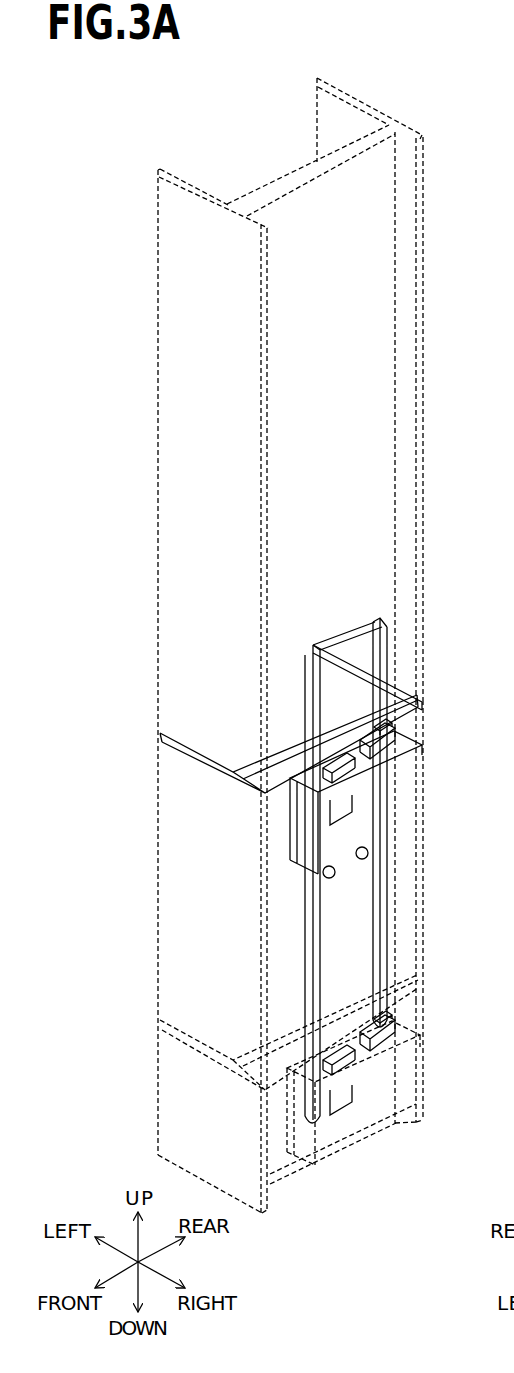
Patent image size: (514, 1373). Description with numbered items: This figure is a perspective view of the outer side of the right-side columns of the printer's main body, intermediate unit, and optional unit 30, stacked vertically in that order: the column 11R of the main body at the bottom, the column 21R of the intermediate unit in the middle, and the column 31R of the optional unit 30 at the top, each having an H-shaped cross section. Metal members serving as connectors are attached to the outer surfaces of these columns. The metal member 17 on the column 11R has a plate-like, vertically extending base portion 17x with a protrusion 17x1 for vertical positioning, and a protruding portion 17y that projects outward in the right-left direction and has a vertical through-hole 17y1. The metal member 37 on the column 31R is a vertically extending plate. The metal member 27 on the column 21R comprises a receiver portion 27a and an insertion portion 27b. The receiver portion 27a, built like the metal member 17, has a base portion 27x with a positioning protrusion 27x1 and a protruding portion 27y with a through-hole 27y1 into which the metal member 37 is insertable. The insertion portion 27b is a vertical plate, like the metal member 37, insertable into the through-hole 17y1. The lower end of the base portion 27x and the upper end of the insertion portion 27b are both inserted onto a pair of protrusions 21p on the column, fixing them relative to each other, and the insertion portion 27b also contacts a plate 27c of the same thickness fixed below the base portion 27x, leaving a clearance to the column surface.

The optional unit 30 is at (472, 316).
The column 31R is at (417, 405).
The column 21R is at (422, 914).
The column 11R is at (420, 1105).
The metal member 37 is at (312, 712).
The metal member 27 is at (288, 870).
The receiver portion 27a is at (300, 830).
The insertion portion 27b is at (307, 963).
The plate 27c is at (400, 958).
The base portion 27x is at (356, 766).
The protrusion 27x1 is at (345, 815).
The protruding portion 27y is at (395, 742).
The through-hole 27y1 is at (390, 724).
The protrusions 21p is at (368, 855).
The metal member 17 is at (278, 1122).
The base portion 17x is at (370, 1058).
The protrusion 17x1 is at (357, 1100).
The protruding portion 17y is at (396, 1034).
The through-hole 17y1 is at (392, 1016).